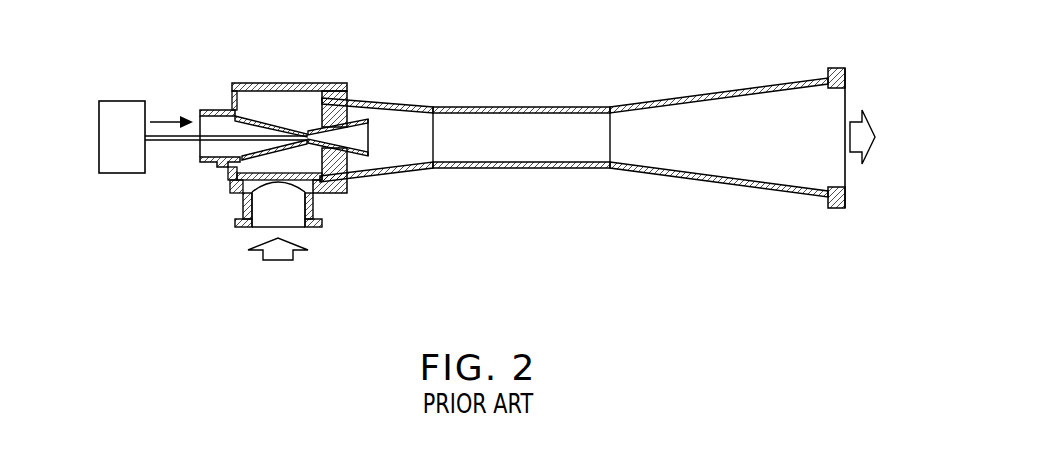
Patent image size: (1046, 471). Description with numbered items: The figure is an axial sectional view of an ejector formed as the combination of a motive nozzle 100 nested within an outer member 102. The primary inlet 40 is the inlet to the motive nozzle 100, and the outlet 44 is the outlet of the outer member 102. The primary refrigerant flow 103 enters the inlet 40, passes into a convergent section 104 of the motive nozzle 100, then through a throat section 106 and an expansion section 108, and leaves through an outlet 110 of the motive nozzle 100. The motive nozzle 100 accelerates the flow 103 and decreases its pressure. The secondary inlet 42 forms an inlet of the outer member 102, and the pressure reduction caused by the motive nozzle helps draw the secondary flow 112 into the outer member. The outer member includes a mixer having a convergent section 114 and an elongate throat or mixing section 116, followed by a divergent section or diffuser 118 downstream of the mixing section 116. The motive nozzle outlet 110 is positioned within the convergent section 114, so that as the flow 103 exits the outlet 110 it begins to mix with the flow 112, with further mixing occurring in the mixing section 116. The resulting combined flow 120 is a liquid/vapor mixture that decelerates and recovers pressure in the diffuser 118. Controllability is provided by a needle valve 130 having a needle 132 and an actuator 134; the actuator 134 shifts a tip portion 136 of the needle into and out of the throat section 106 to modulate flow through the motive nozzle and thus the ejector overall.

The primary inlet 40 is at (202, 155).
The secondary inlet 42 is at (276, 228).
The outlet 44 is at (845, 101).
The motive nozzle 100 is at (285, 110).
The outer member 102 is at (396, 140).
The primary refrigerant flow 103 is at (160, 120).
The convergent section 104 is at (243, 163).
The throat section 106 is at (313, 152).
The expansion section 108 is at (358, 154).
The outlet of the motive nozzle 110 is at (370, 138).
The secondary flow 112 is at (277, 249).
The convergent section 114 is at (422, 166).
The mixing section 116 is at (516, 126).
The diffuser 118 is at (706, 100).
The combined flow 120 is at (860, 145).
The needle valve 130 is at (137, 186).
The needle 132 is at (222, 134).
The actuator 134 is at (105, 145).
The tip portion 136 is at (311, 136).